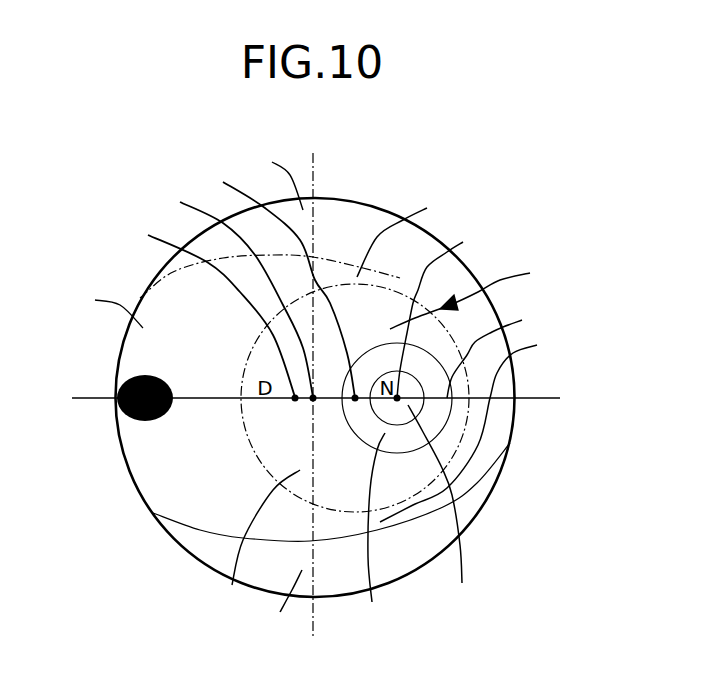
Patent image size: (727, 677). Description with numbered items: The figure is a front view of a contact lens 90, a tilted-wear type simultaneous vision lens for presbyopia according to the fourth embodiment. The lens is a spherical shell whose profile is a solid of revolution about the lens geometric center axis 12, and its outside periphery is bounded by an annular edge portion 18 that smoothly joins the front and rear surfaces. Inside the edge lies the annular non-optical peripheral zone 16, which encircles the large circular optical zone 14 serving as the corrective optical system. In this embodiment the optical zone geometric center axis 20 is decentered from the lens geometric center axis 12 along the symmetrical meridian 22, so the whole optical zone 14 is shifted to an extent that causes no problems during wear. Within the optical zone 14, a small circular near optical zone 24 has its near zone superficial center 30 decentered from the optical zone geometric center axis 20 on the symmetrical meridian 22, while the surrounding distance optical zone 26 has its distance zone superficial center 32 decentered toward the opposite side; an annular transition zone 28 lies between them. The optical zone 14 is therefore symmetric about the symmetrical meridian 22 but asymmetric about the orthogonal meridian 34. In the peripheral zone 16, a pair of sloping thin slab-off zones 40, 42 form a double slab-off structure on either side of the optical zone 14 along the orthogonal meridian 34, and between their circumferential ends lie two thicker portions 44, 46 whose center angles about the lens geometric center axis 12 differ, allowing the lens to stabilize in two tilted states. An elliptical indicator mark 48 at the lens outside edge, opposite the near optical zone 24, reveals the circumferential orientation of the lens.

The lens geometric center axis 12 is at (230, 294).
The optical zone 14 is at (474, 294).
The peripheral zone 16 is at (406, 236).
The edge portion 18 is at (370, 205).
The optical zone geometric center axis 20 is at (272, 282).
The symmetrical meridian 22 is at (499, 352).
The near optical zone 24 is at (442, 510).
The distance optical zone 26 is at (259, 542).
The transition zone 28 is at (373, 533).
The near zone superficial center 30 is at (449, 312).
The distance zone superficial center 32 is at (205, 310).
The orthogonal meridian 34 is at (317, 177).
The slab-off zone 40 is at (275, 179).
The slab-off zone 42 is at (283, 607).
The thicker portion 44 is at (103, 308).
The thicker portion 46 is at (480, 428).
The indicator mark 48 is at (132, 375).
The contact lens 90 is at (530, 185).